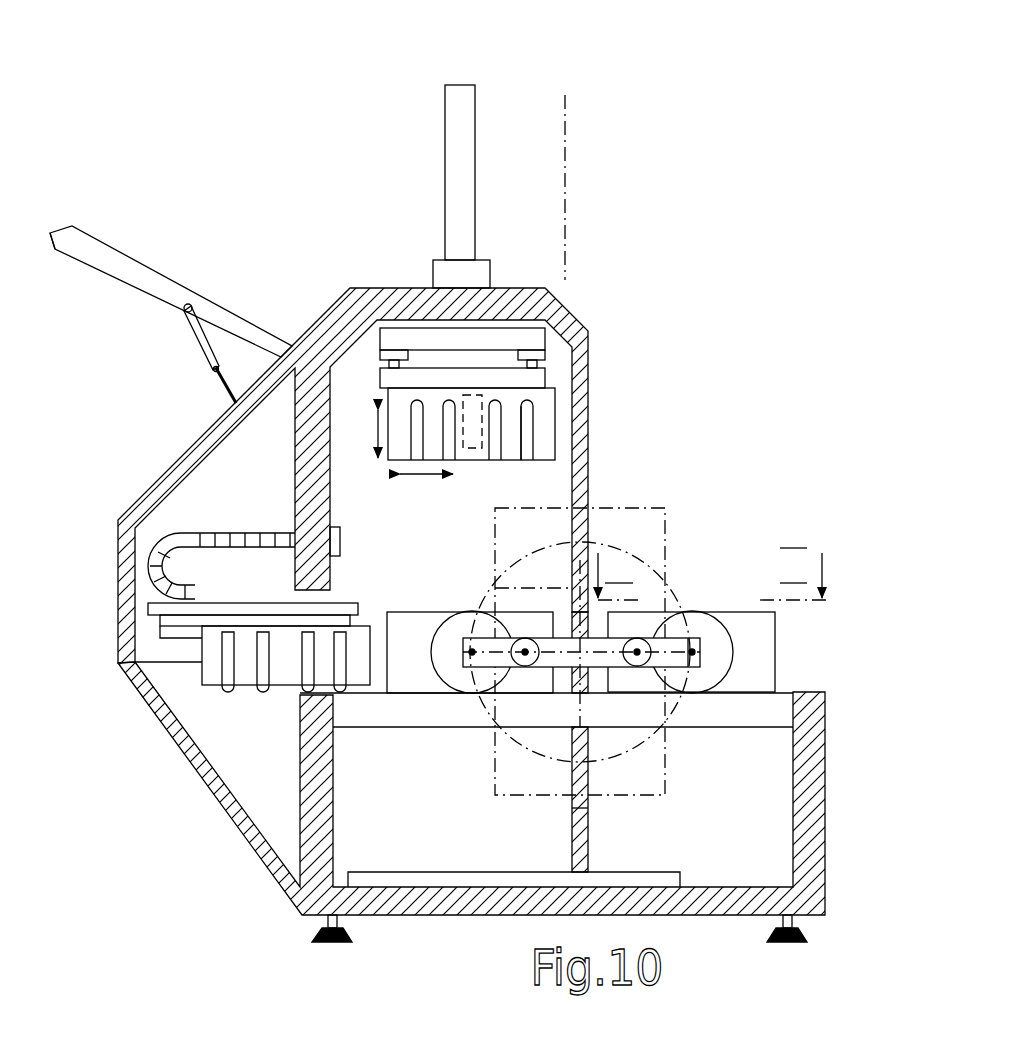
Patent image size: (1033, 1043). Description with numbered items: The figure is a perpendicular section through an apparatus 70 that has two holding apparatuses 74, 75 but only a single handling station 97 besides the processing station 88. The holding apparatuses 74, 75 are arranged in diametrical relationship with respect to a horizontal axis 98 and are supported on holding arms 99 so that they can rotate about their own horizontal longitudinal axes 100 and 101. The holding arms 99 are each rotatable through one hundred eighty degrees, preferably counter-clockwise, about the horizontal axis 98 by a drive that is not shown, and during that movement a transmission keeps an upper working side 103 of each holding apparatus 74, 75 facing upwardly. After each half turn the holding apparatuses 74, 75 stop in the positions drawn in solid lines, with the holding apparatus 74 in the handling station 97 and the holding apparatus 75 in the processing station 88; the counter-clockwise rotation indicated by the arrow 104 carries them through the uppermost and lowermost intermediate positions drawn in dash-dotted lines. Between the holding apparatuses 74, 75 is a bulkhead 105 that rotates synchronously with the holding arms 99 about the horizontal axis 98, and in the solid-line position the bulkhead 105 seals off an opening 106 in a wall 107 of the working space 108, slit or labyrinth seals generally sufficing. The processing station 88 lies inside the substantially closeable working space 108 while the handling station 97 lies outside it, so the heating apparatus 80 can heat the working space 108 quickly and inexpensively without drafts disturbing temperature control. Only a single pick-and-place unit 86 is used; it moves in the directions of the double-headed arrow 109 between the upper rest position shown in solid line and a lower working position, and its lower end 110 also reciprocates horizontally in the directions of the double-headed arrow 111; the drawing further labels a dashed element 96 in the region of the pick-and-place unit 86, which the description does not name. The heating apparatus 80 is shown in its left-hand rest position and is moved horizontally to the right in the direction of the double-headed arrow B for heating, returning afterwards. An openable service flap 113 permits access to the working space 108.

The apparatus 70 is at (815, 330).
The holding apparatus 74 is at (674, 557).
The holding apparatus 75 is at (383, 609).
The heating apparatus 80 is at (240, 605).
The pick-and-place unit 86 is at (386, 398).
The processing station 88 is at (565, 90).
The mold insert 96 is at (482, 400).
The handling station 97 is at (562, 95).
The horizontal axis 98 is at (603, 676).
The holding arms 99 is at (563, 638).
The horizontal longitudinal axis 100 is at (768, 672).
The horizontal longitudinal axis 101 is at (440, 665).
The upper working side 103 is at (433, 612).
The arrow 104 is at (554, 734).
The bulkhead 105 is at (605, 522).
The opening 106 is at (588, 490).
The wall 107 is at (588, 428).
The working space 108 is at (352, 368).
The double-headed arrow 109 is at (374, 436).
The lower end 110 is at (510, 455).
The double-headed arrow 111 is at (433, 474).
The service flap 113 is at (75, 236).
The double-headed arrow B is at (288, 567).